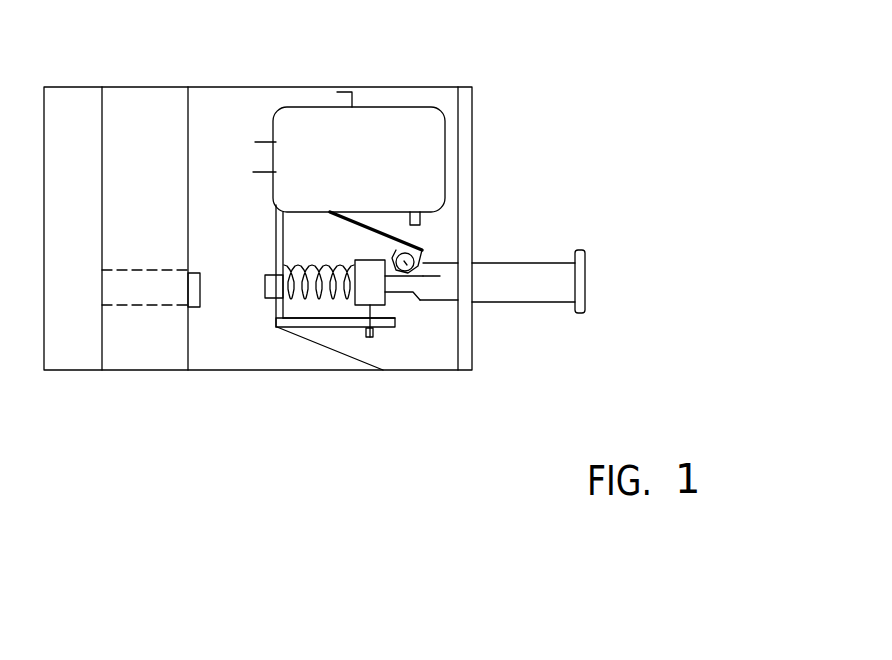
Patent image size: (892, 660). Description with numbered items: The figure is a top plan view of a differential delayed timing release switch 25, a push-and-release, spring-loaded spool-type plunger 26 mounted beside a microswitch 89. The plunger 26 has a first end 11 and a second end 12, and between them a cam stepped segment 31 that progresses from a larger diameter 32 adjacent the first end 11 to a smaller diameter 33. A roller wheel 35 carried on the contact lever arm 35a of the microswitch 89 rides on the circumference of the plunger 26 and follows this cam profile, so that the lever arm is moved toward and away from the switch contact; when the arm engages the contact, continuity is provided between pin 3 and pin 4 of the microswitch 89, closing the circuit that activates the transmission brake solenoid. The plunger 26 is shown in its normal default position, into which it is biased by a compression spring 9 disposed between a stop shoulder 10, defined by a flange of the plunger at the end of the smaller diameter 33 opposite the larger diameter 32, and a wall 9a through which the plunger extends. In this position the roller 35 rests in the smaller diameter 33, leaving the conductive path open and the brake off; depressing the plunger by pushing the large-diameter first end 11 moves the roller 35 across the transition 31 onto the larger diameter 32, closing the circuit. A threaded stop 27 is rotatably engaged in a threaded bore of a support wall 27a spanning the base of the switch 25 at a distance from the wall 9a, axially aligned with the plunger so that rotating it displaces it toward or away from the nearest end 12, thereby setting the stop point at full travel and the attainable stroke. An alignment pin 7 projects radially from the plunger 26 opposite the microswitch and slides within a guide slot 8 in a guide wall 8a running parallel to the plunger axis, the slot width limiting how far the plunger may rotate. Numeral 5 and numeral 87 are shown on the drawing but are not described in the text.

The pin 3 is at (345, 88).
The pin 4 is at (265, 140).
The mounting bracket 5 is at (253, 170).
The alignment pin 7 is at (353, 310).
The guide slot 8 is at (313, 328).
The guide wall 8a is at (368, 338).
The compression spring 9 is at (275, 327).
The wall 9a is at (272, 269).
The stop shoulder 10 is at (345, 318).
The first end 11 is at (557, 288).
The second end 12 is at (268, 292).
The differential delayed timing release switch 25 is at (483, 140).
The plunger 26 is at (508, 307).
The threaded stop 27 is at (199, 290).
The support wall 27a is at (123, 315).
The cam stepped segment 31 is at (415, 300).
The larger diameter 32 is at (440, 307).
The smaller diameter 33 is at (395, 298).
The roller wheel 35 is at (422, 258).
The contact lever arm 35a is at (367, 233).
The tab 87 is at (420, 222).
The microswitch 89 is at (402, 107).